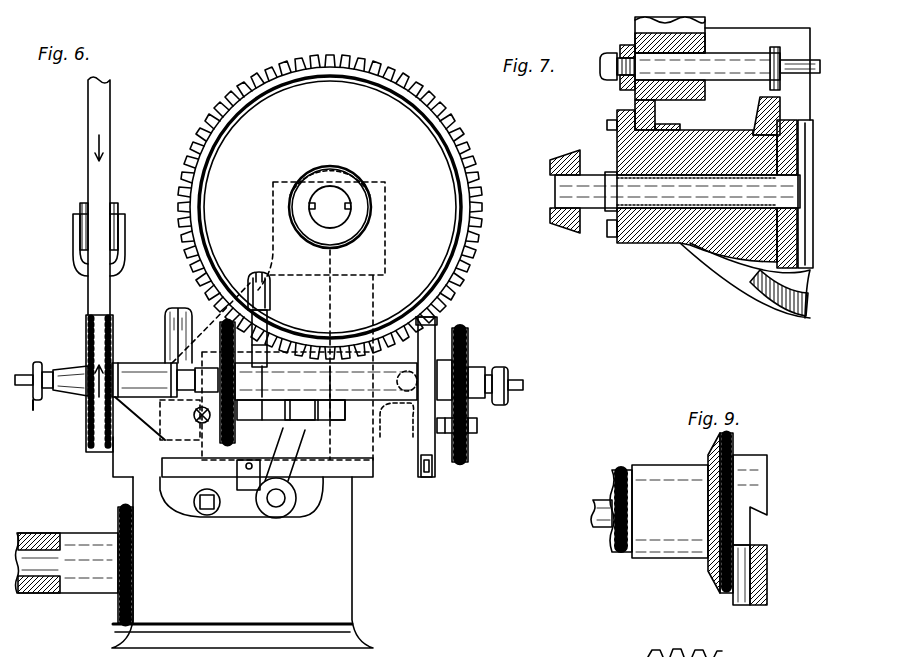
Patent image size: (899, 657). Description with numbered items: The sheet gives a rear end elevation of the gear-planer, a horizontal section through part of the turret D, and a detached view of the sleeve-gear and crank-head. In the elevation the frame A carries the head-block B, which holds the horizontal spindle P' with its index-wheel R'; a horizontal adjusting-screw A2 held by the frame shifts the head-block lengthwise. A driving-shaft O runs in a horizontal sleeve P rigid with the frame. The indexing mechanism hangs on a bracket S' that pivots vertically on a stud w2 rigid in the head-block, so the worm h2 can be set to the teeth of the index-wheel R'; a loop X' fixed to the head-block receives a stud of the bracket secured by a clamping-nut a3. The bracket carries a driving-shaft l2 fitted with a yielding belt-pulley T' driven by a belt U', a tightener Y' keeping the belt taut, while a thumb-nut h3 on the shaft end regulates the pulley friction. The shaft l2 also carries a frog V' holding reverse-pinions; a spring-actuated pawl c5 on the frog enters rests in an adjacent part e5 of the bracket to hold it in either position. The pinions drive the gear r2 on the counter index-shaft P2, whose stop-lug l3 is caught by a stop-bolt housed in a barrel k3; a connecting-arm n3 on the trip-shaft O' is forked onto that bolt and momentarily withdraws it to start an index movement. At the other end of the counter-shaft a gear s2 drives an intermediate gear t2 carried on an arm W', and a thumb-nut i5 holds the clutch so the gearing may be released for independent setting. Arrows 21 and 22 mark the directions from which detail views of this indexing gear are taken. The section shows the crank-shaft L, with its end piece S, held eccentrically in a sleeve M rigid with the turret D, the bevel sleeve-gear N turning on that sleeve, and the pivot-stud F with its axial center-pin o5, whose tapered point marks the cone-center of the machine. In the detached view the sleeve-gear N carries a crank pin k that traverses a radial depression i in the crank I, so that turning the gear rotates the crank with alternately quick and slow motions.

In FIG. 6, the index-wheel R' is at (330, 207).
In FIG. 6, the horizontal spindle P' is at (330, 183).
In FIG. 6, the loop X' is at (277, 321).
In FIG. 6, the driving-belt U' is at (80, 196).
In FIG. 6, the belt-pulley T' is at (79, 384).
In FIG. 6, the tightener Y' is at (76, 239).
In FIG. 6, the clamping-nut a3 is at (70, 367).
In FIG. 6, the driving-shaft l2 is at (20, 373).
In FIG. 6, the thumb-nut h3 is at (38, 398).
In FIG. 6, the pivot-stud w2 is at (165, 430).
In FIG. 6, the gear r2 is at (222, 350).
In FIG. 6, the stop-lug l3 is at (326, 381).
In FIG. 6, the sleeve or barrel k3 is at (296, 381).
In FIG. 6, the frog V' is at (241, 304).
In FIG. 6, the spring-actuated pawl c5 is at (262, 272).
In FIG. 6, the adjacent part of bracket e5 is at (260, 333).
In FIG. 6, the head-block B is at (207, 316).
In FIG. 6, the arrow 21 is at (320, 321).
In FIG. 6, the connecting-arm n3 is at (290, 441).
In FIG. 6, the worm h2 is at (348, 410).
In FIG. 6, the frame A is at (242, 542).
In FIG. 6, the horizontal sleeve P is at (67, 549).
In FIG. 6, the driving-shaft O is at (43, 579).
In FIG. 6, the adjusting-screw A2 is at (207, 513).
In FIG. 6, the trip-shaft O' is at (280, 496).
In FIG. 6, the index-bracket S' is at (398, 437).
In FIG. 6, the arm W' is at (441, 410).
In FIG. 6, the gear s2 is at (462, 331).
In FIG. 6, the intermediate gear t2 is at (468, 449).
In FIG. 6, the counter index-shaft P2 is at (518, 378).
In FIG. 6, the thumb-nut i5 is at (506, 400).
In FIG. 6, the arrow 22 is at (585, 385).
In FIG. 7, the pivot-stud F is at (707, 66).
In FIG. 7, the center-pin o5 is at (605, 80).
In FIG. 7, the crank I is at (759, 148).
In FIG. 9, the crank I is at (767, 470).
In FIG. 7, the bevel sleeve-gear N is at (760, 115).
In FIG. 9, the bevel sleeve-gear N is at (670, 511).
In FIG. 7, the sleeve M is at (622, 243).
In FIG. 9, the sleeve M is at (619, 469).
In FIG. 7, the crank-shaft L is at (655, 210).
In FIG. 9, the crank-shaft L is at (600, 500).
In FIG. 7, the head S is at (561, 207).
In FIG. 7, the turret D is at (735, 283).
In FIG. 9, the crank pin k is at (767, 556).
In FIG. 9, the radial chamber i is at (735, 590).